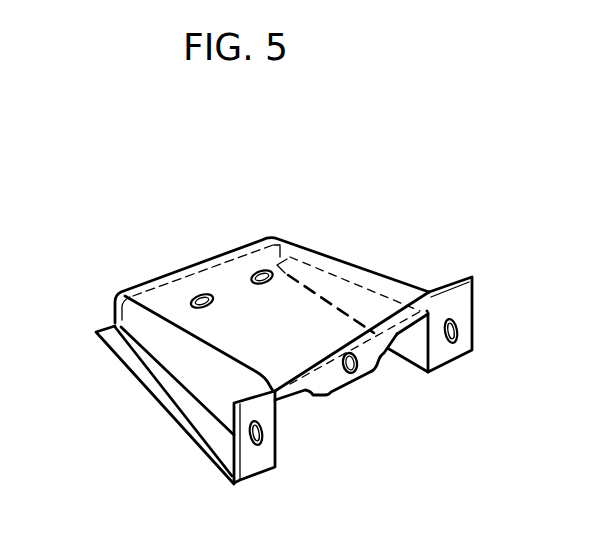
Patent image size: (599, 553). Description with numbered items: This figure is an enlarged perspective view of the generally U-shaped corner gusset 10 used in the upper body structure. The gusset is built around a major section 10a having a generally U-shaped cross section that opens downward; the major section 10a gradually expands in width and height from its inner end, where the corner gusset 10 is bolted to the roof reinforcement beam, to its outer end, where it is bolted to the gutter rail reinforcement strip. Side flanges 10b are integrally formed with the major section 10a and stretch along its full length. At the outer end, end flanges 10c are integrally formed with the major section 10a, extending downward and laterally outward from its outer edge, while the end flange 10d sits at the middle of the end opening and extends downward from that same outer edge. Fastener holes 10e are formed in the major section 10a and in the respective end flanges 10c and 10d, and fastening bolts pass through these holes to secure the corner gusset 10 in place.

The corner gusset 10 is at (339, 247).
The major section 10a is at (377, 283).
The side flanges 10b is at (128, 378).
The end flanges 10c is at (442, 365).
The end flange 10d is at (374, 369).
The fastener holes 10e is at (250, 276).